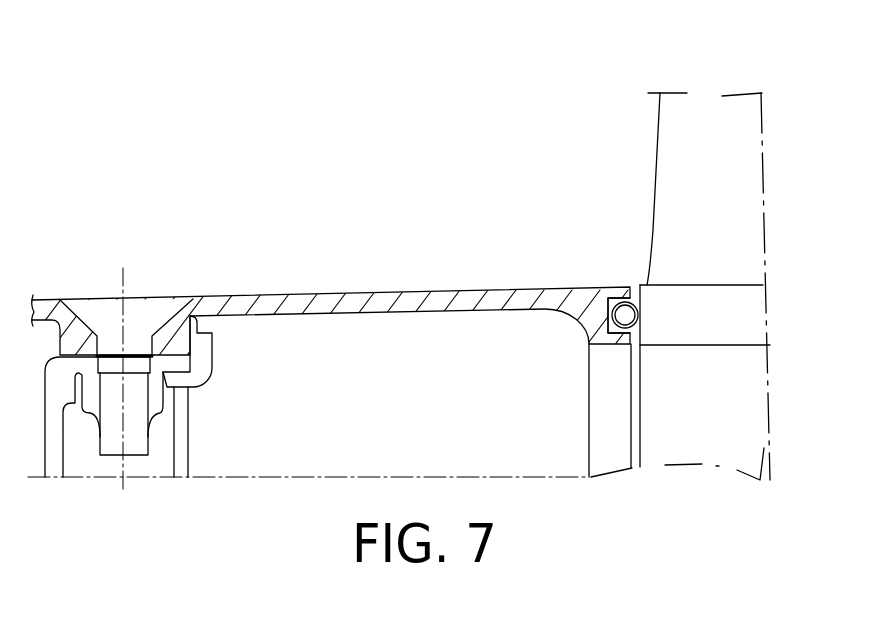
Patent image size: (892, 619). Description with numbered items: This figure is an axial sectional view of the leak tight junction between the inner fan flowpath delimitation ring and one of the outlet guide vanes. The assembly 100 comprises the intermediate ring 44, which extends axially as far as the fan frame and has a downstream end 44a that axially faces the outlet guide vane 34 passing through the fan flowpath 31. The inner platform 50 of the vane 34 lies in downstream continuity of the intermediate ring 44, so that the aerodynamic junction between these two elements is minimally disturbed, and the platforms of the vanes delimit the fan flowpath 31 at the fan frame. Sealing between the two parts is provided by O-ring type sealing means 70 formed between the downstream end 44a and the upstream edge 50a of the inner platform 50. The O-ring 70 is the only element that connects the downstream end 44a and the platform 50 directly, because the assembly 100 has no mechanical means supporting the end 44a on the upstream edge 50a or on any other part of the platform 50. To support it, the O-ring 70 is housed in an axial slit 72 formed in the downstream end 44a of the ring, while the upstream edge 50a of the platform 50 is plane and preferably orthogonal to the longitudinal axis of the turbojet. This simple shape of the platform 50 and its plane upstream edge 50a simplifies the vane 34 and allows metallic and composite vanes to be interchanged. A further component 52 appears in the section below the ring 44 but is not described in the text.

The assembly 100 is at (566, 189).
The fan flowpath 31 is at (460, 238).
The outlet guide vane 34 is at (710, 94).
The intermediate ring 44 is at (288, 292).
The downstream end 44a is at (616, 287).
The inner platform 50 is at (730, 315).
The upstream edge 50a is at (636, 345).
The bracket 52 is at (206, 381).
The O-ring 70 is at (607, 311).
The axial slit 72 is at (617, 343).